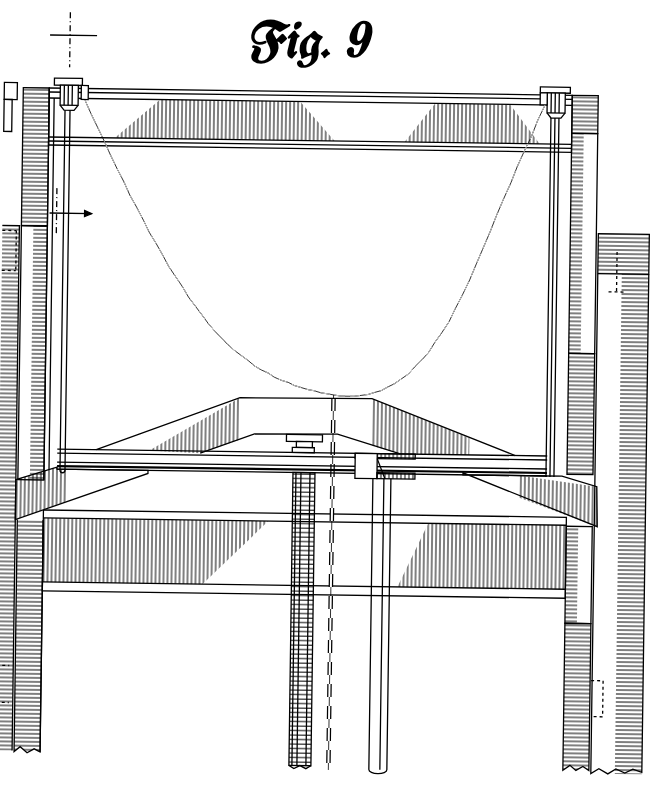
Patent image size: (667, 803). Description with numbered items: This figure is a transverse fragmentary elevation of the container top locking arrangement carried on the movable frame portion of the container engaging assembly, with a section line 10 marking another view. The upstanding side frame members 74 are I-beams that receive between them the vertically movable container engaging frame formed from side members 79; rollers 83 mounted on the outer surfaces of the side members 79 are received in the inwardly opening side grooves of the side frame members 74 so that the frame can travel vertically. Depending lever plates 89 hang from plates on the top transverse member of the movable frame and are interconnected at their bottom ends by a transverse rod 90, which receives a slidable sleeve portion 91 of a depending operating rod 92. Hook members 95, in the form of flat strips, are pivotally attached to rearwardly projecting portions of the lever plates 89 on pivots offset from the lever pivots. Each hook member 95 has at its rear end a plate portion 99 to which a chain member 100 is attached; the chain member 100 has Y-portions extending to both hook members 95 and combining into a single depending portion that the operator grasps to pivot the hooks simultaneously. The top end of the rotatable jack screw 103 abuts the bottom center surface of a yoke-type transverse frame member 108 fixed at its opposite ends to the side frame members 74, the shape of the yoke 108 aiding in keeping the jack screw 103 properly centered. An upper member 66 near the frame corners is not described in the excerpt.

The section line 10 is at (74, 127).
The upper cross beam 66 is at (79, 104).
The upstanding side frame member 74 is at (647, 213).
The side member 79 is at (40, 624).
The roller 83 is at (629, 293).
The lever plate 89 is at (67, 335).
The transverse rod 90 is at (194, 478).
The sleeve portion 91 is at (400, 479).
The operating rod 92 is at (393, 667).
The hook member 95 is at (67, 82).
The plate portion 99 is at (82, 90).
The chain member 100 is at (243, 320).
The jack screw 103 is at (294, 673).
The yoke-type transverse frame member 108 is at (445, 400).